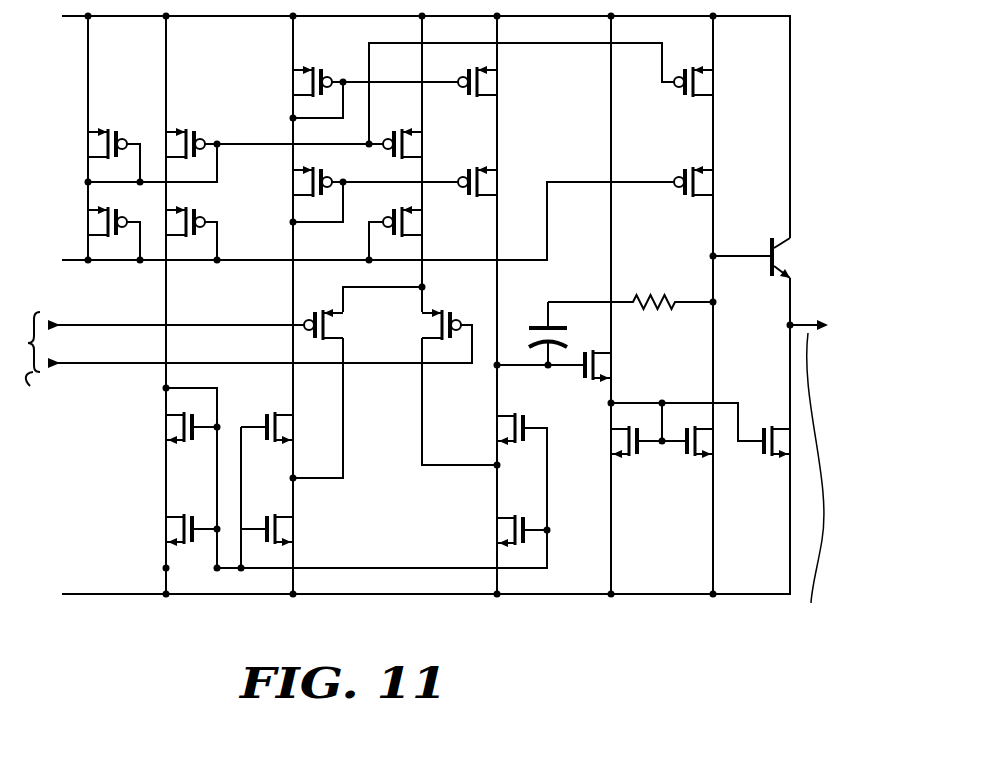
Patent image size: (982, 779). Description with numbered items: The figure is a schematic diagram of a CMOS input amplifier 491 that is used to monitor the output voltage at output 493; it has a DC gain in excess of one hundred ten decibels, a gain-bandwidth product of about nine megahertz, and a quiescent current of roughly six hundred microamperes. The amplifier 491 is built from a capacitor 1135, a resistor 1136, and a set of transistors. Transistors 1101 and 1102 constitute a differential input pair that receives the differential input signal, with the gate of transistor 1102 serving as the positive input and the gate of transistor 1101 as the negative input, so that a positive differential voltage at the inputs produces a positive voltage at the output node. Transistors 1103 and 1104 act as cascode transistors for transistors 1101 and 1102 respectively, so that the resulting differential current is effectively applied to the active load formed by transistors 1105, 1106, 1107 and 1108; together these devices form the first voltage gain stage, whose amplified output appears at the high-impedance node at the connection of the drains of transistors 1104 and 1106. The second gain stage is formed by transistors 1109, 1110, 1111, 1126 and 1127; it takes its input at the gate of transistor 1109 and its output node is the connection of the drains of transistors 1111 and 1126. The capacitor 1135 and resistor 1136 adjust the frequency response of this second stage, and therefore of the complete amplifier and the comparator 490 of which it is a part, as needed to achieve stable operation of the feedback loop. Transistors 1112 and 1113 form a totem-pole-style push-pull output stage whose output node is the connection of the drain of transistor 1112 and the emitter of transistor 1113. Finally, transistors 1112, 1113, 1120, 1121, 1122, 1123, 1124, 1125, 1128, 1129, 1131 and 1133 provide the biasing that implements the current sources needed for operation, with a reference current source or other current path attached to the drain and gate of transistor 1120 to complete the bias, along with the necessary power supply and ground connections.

The transistor 1101 is at (311, 312).
The transistor 1102 is at (435, 312).
The transistor 1103 is at (263, 416).
The transistor 1104 is at (497, 425).
The transistor 1105 is at (300, 182).
The transistor 1106 is at (485, 182).
The transistor 1107 is at (300, 82).
The transistor 1108 is at (485, 82).
The transistor 1109 is at (611, 355).
The transistor 1110 is at (630, 455).
The transistor 1111 is at (693, 455).
The transistor 1112 is at (762, 428).
The transistor 1113 is at (782, 253).
The transistor 1120 is at (95, 222).
The transistor 1121 is at (97, 144).
The transistor 1122 is at (188, 210).
The transistor 1123 is at (187, 131).
The transistor 1124 is at (411, 222).
The transistor 1125 is at (411, 145).
The transistor 1126 is at (703, 182).
The transistor 1127 is at (703, 82).
The transistor 1128 is at (173, 426).
The transistor 1129 is at (173, 531).
The transistor 1131 is at (267, 517).
The transistor 1133 is at (497, 527).
The capacitor 1135 is at (524, 330).
The resistor 1136 is at (651, 296).
The CMOS input amplifier 491 is at (600, 645).
The output 493 is at (55, 387).
The comparator 490 is at (803, 500).